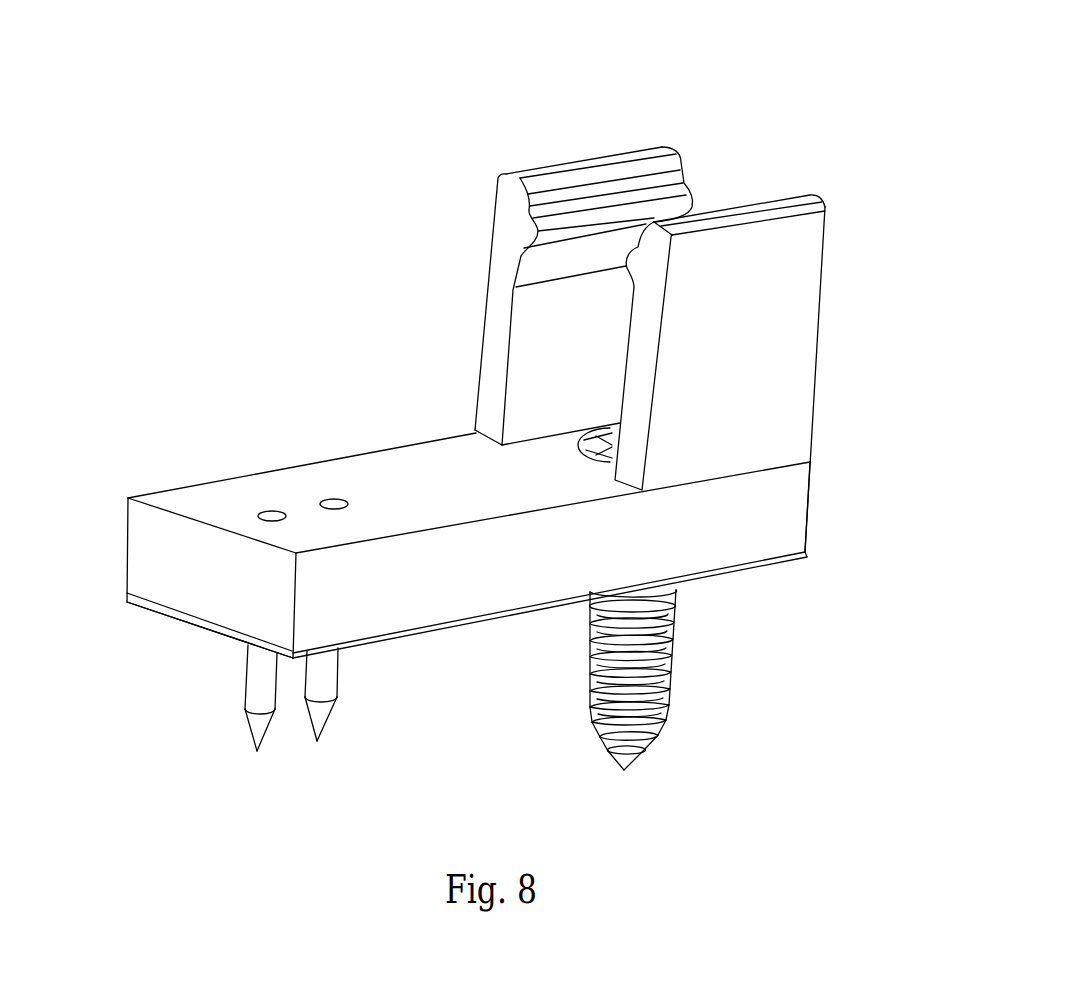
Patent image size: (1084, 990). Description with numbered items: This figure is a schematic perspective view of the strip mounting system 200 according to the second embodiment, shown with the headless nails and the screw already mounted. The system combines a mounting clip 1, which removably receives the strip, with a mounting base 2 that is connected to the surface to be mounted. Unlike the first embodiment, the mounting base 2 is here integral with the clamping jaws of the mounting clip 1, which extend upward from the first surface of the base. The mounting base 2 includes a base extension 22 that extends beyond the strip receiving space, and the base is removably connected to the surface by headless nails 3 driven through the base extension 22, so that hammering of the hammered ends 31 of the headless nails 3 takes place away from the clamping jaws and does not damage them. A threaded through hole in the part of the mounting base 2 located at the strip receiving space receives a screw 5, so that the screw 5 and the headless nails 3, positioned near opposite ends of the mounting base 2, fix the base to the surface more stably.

The strip mounting system 200 is at (774, 94).
The mounting clip 1 is at (770, 365).
The mounting base 2 is at (774, 522).
The base extension 22 is at (202, 592).
The headless nail 3 is at (266, 673).
The hammered end 31 is at (336, 503).
The screw 5 is at (684, 654).